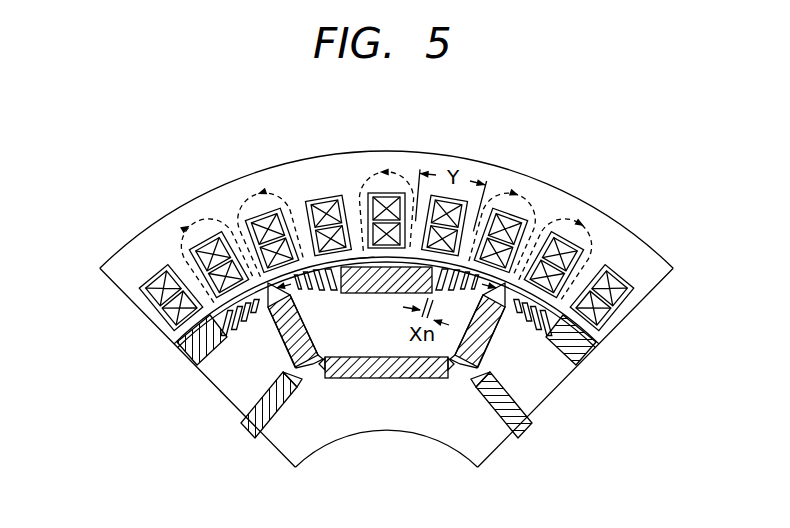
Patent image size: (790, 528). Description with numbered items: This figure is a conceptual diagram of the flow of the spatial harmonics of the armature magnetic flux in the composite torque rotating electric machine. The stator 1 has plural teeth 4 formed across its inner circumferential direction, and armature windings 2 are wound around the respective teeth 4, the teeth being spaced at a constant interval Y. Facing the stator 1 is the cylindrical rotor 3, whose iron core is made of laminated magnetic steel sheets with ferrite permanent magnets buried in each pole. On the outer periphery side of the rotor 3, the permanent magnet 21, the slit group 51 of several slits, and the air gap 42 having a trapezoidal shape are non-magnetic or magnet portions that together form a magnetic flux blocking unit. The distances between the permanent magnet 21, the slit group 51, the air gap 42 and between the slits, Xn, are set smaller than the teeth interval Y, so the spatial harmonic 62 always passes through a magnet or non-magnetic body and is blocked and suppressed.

The stator 1 is at (123, 256).
The armature windings 2 is at (322, 197).
The rotor 3 is at (387, 421).
The teeth 4 is at (353, 210).
The permanent magnet 21 is at (374, 293).
The air gap having a trapezoidal shape 42 is at (267, 286).
The slit group 51 is at (308, 289).
The magnetic flux path 62 is at (187, 230).